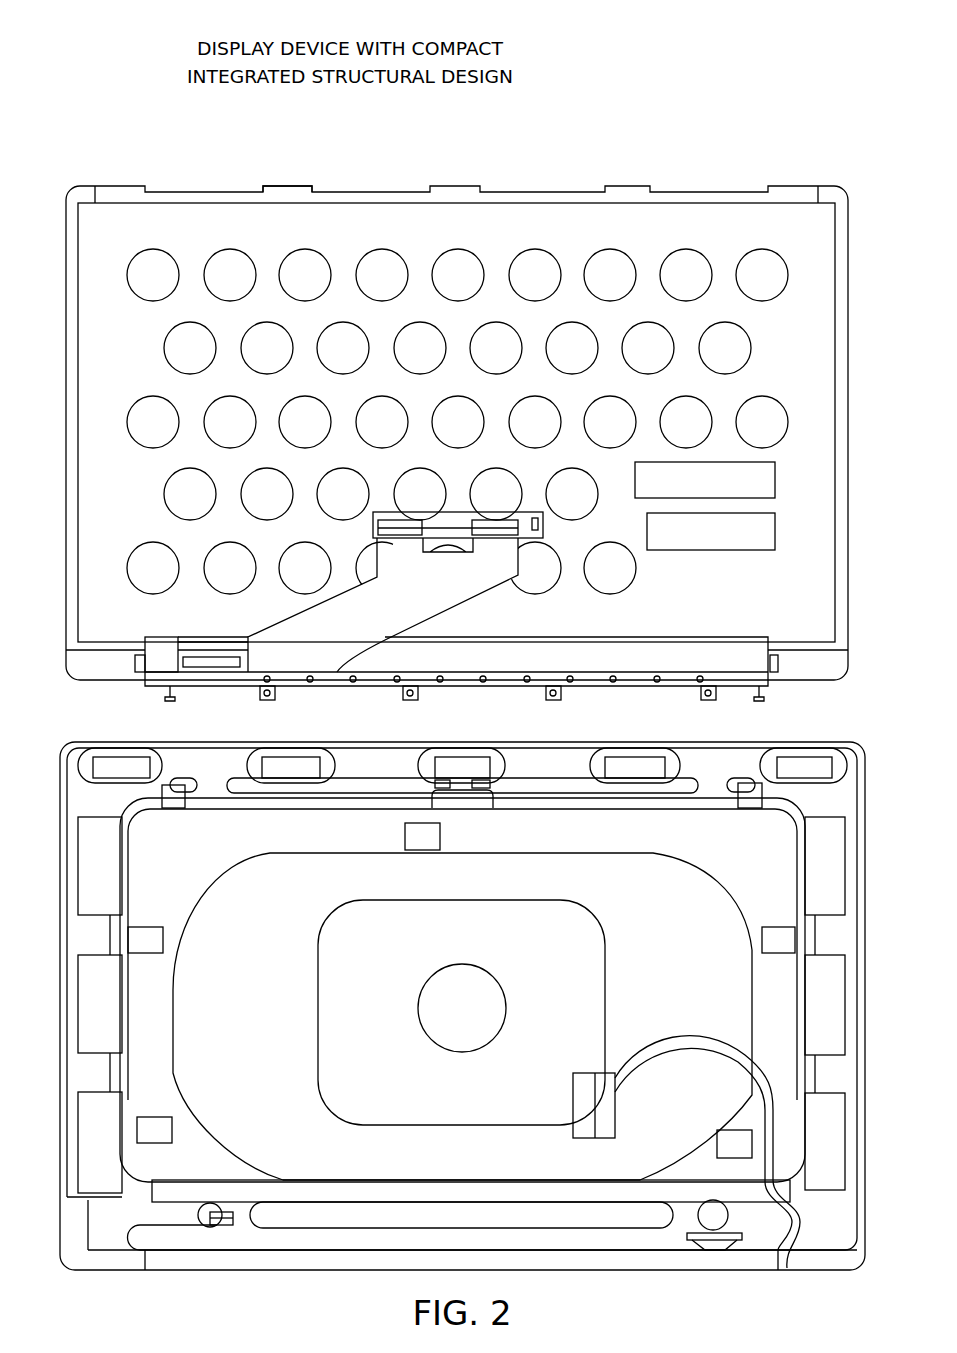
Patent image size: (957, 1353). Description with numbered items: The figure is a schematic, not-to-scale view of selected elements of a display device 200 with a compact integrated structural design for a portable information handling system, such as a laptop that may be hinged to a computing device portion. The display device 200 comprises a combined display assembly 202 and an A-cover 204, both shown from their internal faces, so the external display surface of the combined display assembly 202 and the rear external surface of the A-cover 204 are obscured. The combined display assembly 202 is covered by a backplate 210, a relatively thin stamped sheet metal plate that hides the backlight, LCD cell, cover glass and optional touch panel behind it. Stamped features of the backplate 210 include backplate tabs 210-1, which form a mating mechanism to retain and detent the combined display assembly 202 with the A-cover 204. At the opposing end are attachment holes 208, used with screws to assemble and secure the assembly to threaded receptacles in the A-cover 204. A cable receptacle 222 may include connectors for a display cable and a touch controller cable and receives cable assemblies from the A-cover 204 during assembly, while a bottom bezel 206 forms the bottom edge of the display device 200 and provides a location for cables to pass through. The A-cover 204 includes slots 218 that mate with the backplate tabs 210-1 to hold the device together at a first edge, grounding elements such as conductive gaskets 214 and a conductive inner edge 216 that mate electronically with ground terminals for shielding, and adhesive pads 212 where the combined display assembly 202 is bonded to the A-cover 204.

The display device 200 is at (369, 156).
The combined display assembly 202 is at (540, 190).
The A-cover 204 is at (82, 742).
The bottom bezel 206 is at (800, 684).
The attachment holes 208 is at (567, 688).
The backplate 210 is at (475, 237).
The backplate tabs 210-1 is at (288, 197).
The adhesive pads 212 is at (110, 866).
The conductive gaskets 214 is at (152, 941).
The conductive inner edge 216 is at (140, 746).
The slots 218 is at (296, 767).
The cable receptacle 222 is at (432, 528).